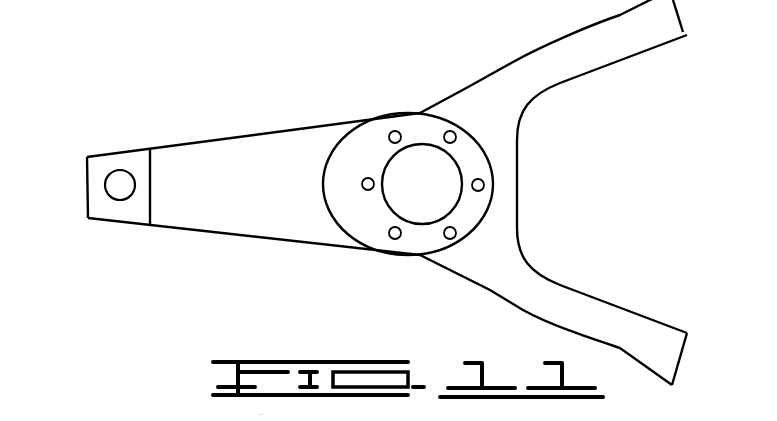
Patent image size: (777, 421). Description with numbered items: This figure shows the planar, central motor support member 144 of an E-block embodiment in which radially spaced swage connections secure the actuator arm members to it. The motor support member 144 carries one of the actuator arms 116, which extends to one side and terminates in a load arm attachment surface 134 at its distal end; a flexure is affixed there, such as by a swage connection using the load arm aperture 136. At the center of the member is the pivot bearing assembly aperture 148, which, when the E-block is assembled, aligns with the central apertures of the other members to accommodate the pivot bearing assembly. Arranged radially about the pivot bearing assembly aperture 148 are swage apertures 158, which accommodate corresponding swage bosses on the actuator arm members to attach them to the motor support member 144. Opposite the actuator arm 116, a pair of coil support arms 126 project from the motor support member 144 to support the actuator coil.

The motor support member 144 is at (220, 98).
The actuator arm 116 is at (220, 220).
The load arm attachment surface 134 is at (125, 160).
The load arm aperture 136 is at (120, 200).
The pivot bearing assembly aperture 148 is at (423, 196).
The swage aperture 158 is at (397, 128).
The coil support arms 126 is at (618, 45).